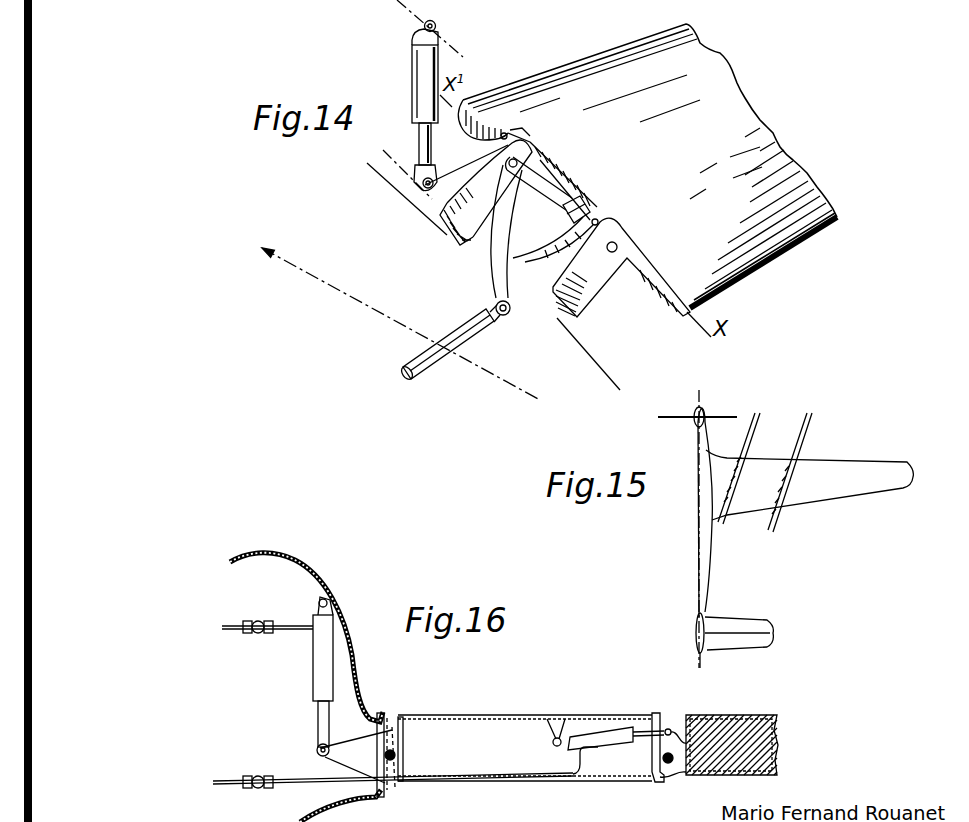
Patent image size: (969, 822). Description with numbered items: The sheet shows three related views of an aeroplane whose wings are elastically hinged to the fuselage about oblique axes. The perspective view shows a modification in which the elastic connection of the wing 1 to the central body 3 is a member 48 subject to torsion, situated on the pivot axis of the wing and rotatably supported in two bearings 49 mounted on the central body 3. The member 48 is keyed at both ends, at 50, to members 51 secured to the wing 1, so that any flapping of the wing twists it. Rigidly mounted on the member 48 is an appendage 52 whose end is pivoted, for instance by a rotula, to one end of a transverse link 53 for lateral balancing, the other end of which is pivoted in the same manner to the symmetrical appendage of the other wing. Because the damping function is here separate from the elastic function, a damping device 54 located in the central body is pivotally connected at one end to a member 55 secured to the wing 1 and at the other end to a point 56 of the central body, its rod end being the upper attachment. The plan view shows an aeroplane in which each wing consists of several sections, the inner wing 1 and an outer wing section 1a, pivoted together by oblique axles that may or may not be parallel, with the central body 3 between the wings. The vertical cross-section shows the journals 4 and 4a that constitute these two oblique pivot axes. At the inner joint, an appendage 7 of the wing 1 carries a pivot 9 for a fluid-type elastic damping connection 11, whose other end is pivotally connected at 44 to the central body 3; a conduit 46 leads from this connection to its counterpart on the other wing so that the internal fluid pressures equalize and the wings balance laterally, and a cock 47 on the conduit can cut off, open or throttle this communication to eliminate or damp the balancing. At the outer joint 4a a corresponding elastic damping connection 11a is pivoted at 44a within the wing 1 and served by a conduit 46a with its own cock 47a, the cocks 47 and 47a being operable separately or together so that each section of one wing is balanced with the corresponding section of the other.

In FIG. 14, the wing 1 is at (593, 97).
In FIG. 15, the wing 1 is at (809, 476).
In FIG. 16, the wing 1 is at (478, 714).
In FIG. 15, the outer wing section 1a is at (835, 483).
In FIG. 16, the outer wing section 1a is at (720, 728).
In FIG. 14, the central body 3 is at (367, 163).
In FIG. 15, the central body 3 is at (707, 578).
In FIG. 16, the central body 3 is at (295, 562).
In FIG. 16, the journal 4 is at (392, 730).
In FIG. 16, the journal 4a is at (652, 767).
In FIG. 16, the appendage 7 is at (357, 748).
In FIG. 16, the pivot 9 is at (317, 751).
In FIG. 16, the elastic damping connection 11 is at (322, 677).
In FIG. 16, the outer wing hydraulic cylinder 11a is at (590, 735).
In FIG. 16, the pivotal connection 44 is at (328, 602).
In FIG. 16, the cylinder attachment eye (outer) 44a is at (553, 743).
In FIG. 16, the conduit 46 is at (298, 631).
In FIG. 16, the control cable (lower) 46a is at (303, 786).
In FIG. 16, the cock 47 is at (260, 621).
In FIG. 16, the cock 47a is at (260, 776).
In FIG. 14, the torsion member 48 is at (590, 207).
In FIG. 14, the bearings 49 is at (455, 240).
In FIG. 14, the keying point 50 is at (506, 133).
In FIG. 14, the members secured to the wing 51 is at (513, 133).
In FIG. 14, the appendage 52 is at (495, 255).
In FIG. 14, the transverse link 53 is at (433, 353).
In FIG. 14, the damping device 54 is at (420, 62).
In FIG. 14, the member secured to the wing 55 is at (463, 162).
In FIG. 14, the pivot point 56 is at (436, 23).